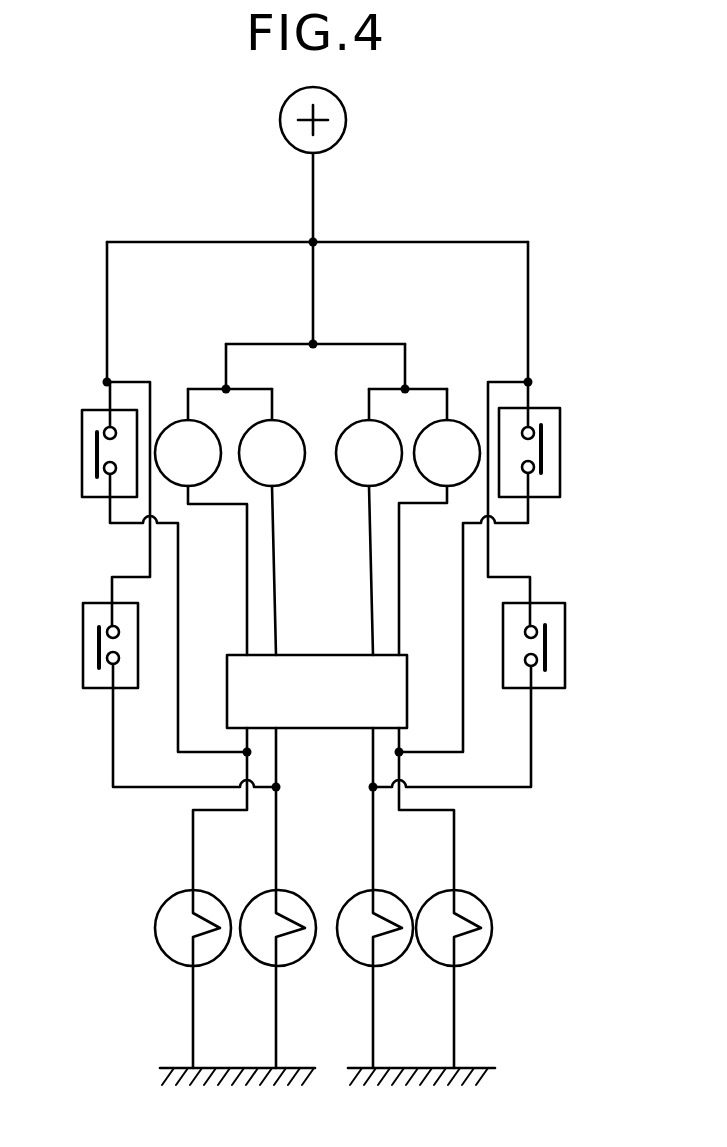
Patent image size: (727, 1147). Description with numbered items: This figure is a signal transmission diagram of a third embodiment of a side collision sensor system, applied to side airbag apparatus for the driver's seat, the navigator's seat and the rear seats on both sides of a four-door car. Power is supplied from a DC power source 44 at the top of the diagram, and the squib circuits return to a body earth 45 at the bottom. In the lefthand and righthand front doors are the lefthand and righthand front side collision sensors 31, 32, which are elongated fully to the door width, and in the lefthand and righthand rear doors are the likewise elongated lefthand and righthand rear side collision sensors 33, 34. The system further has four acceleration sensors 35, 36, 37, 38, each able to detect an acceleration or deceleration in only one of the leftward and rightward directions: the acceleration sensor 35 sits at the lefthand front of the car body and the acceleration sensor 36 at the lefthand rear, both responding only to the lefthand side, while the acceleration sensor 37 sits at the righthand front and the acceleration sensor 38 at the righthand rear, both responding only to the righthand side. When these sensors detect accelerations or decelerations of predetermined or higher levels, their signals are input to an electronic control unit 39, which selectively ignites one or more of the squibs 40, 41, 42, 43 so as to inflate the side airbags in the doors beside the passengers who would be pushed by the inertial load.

The lefthand front side collision sensor 31 is at (88, 430).
The righthand front side collision sensor 32 is at (552, 422).
The lefthand rear side collision sensor 33 is at (92, 628).
The righthand rear side collision sensor 34 is at (552, 612).
The acceleration sensor 35 is at (178, 425).
The acceleration sensor 36 is at (285, 424).
The acceleration sensor 37 is at (455, 425).
The acceleration sensor 38 is at (356, 432).
The electronic control unit 39 is at (316, 666).
The squib 40 is at (168, 912).
The squib 41 is at (436, 910).
The squib 42 is at (258, 910).
The squib 43 is at (356, 910).
The DC power source 44 is at (346, 120).
The body earth 45 is at (182, 1068).